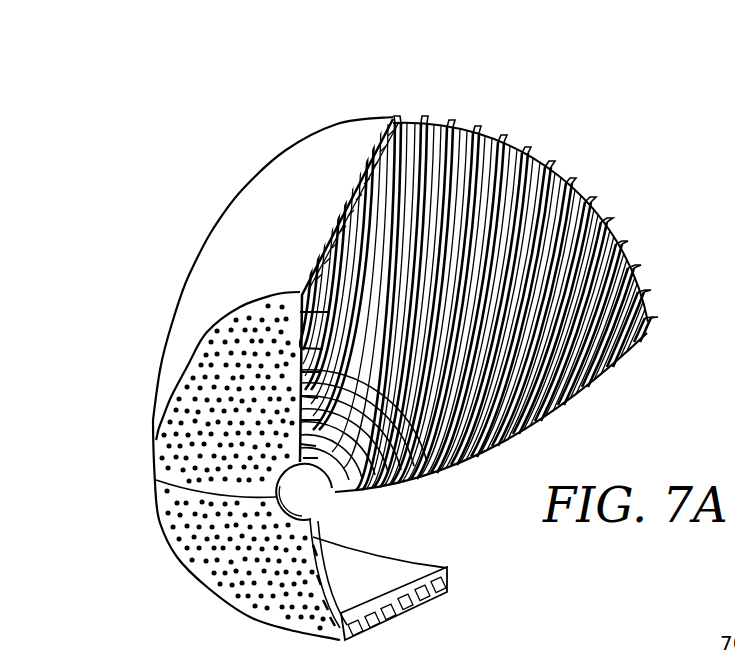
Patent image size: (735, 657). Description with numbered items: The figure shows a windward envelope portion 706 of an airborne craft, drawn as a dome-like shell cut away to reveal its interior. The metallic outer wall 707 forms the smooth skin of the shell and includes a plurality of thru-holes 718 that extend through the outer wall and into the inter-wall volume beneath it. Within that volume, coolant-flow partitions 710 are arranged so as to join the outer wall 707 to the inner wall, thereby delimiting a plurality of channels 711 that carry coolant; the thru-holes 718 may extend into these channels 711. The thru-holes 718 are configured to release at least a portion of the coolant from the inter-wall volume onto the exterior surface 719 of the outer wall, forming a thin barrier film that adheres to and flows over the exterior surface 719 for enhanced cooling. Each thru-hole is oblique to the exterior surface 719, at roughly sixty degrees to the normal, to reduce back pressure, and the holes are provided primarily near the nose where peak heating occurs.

The windward envelope portion 706 is at (652, 162).
The metallic outer wall 707 is at (299, 230).
The coolant-flow partitions 710 is at (426, 120).
The channels 711 is at (441, 132).
The thru-holes 718 is at (253, 318).
The exterior surface 719 is at (208, 344).